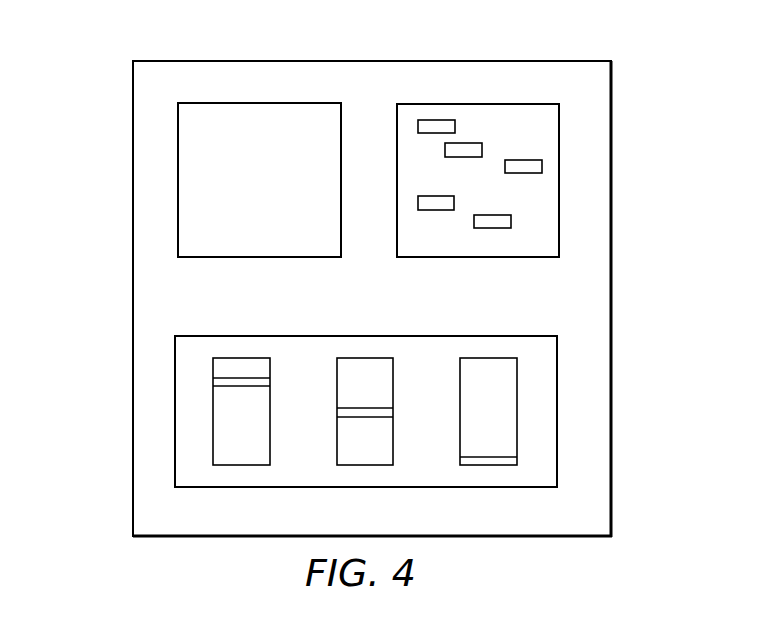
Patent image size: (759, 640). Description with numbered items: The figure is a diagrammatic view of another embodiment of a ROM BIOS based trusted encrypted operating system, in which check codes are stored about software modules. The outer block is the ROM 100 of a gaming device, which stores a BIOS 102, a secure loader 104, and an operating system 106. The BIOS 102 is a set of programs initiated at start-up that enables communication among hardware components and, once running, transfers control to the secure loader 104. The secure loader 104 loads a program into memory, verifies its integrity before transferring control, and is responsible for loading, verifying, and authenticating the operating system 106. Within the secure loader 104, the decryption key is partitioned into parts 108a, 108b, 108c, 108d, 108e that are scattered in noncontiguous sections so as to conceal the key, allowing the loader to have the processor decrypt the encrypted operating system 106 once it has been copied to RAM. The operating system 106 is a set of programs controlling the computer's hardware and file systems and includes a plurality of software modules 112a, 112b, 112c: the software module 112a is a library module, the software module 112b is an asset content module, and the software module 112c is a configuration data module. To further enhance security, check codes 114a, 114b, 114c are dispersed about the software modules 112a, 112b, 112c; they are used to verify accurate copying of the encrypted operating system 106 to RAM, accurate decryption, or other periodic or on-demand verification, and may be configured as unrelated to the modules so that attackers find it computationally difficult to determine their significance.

The ROM 100 is at (133, 129).
The BIOS 102 is at (260, 103).
The secure loader 104 is at (410, 104).
The operating system 106 is at (557, 365).
The decryption key part 108a is at (432, 120).
The decryption key part 108b is at (462, 143).
The decryption key part 108c is at (524, 160).
The decryption key part 108d is at (454, 204).
The decryption key part 108e is at (492, 228).
The software module 112a is at (213, 410).
The software module 112b is at (337, 442).
The software module 112c is at (517, 412).
The check code 114a is at (213, 381).
The check code 114b is at (393, 412).
The check code 114c is at (517, 462).